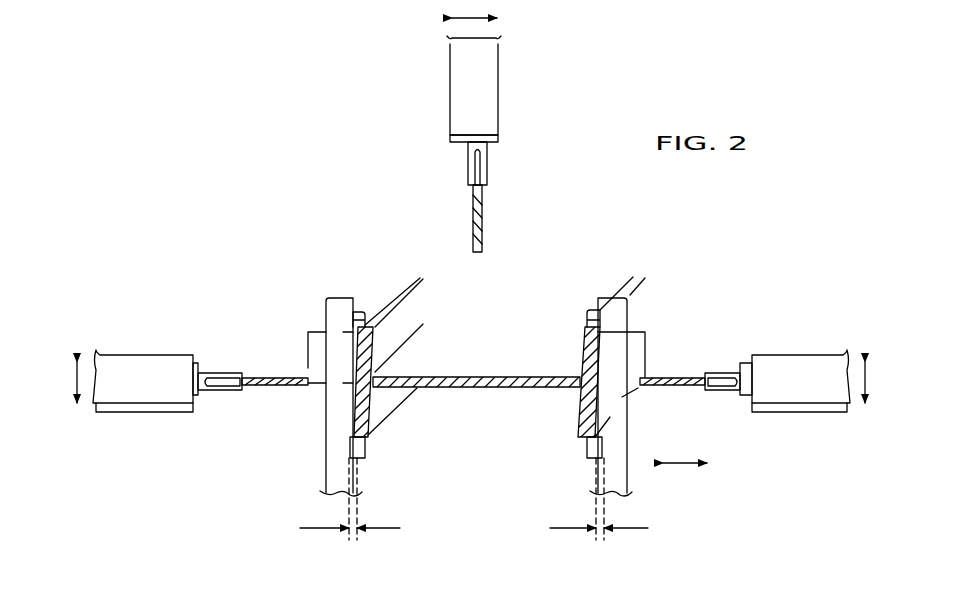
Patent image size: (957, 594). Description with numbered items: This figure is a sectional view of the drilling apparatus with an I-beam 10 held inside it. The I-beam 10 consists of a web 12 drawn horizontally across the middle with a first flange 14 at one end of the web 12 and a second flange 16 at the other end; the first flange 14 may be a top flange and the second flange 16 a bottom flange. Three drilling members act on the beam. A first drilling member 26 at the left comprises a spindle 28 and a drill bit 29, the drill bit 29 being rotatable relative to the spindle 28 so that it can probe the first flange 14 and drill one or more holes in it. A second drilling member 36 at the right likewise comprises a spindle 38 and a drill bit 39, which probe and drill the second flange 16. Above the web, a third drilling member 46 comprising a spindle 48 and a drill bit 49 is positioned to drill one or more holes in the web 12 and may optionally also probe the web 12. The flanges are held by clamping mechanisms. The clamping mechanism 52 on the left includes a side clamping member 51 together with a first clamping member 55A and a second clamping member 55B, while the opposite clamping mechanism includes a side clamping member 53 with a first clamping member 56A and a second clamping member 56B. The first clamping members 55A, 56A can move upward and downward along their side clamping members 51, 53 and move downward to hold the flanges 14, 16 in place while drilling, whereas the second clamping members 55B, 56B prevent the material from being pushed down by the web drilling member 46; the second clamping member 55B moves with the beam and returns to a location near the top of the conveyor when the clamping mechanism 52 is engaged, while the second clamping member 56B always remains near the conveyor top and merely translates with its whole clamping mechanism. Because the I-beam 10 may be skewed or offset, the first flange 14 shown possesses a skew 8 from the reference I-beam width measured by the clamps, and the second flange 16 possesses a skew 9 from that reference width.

The skew 8 is at (358, 529).
The skew 9 is at (608, 529).
The I-beam 10 is at (516, 369).
The web 12 is at (480, 378).
The first flange 14 is at (365, 350).
The second flange 16 is at (587, 347).
The first drilling member 26 is at (192, 368).
The spindle 28 is at (146, 393).
The drill bit 29 is at (268, 377).
The second drilling member 36 is at (752, 371).
The spindle 38 is at (794, 393).
The drill bit 39 is at (668, 378).
The third drilling member 46 is at (466, 135).
The spindle 48 is at (483, 83).
The drill bit 49 is at (478, 218).
The side clamping member 51 is at (337, 308).
The clamping mechanism 52 is at (343, 417).
The side clamping member 53 is at (622, 323).
The first clamping member 55A is at (363, 312).
The second clamping member 55B is at (364, 452).
The first clamping member 56A is at (587, 315).
The second clamping member 56B is at (590, 455).